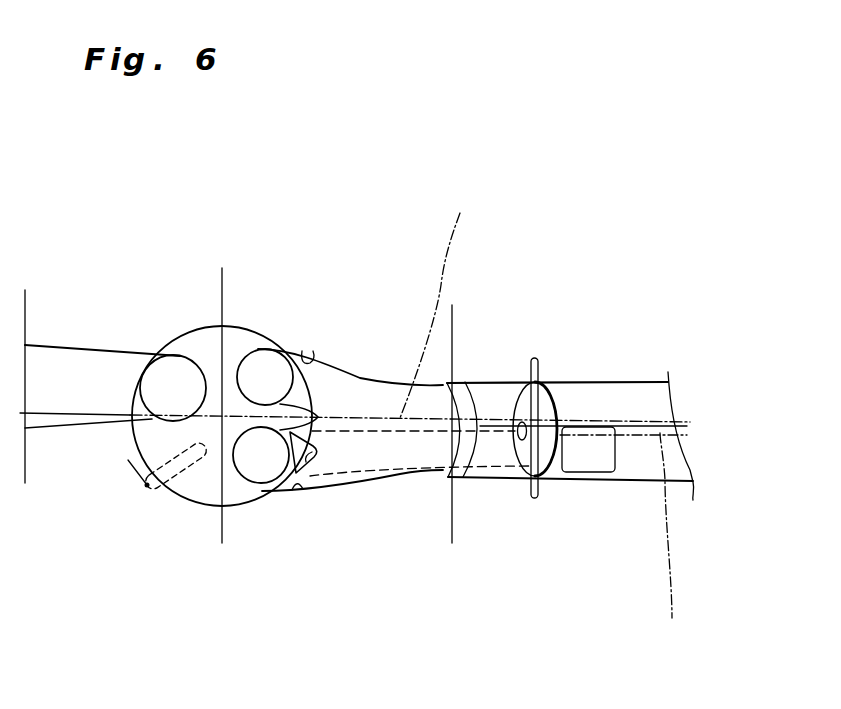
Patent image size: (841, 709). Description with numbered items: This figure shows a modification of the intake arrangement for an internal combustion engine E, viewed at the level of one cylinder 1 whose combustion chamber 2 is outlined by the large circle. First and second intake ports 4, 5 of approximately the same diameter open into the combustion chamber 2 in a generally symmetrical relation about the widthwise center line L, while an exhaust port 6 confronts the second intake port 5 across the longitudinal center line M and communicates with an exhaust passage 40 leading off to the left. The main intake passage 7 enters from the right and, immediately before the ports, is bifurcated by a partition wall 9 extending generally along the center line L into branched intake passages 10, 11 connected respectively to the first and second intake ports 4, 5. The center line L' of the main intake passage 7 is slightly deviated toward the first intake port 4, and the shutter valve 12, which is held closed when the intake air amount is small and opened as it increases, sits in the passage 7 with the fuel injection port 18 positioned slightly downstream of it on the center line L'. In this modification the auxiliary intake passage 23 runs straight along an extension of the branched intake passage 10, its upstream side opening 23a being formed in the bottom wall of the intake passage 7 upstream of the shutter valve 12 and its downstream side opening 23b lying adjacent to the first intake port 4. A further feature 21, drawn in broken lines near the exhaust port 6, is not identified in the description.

The cylinder 1 is at (192, 313).
The combustion chamber 2 is at (207, 500).
The first intake port 4 is at (258, 474).
The second intake port 5 is at (258, 360).
The exhaust port 6 is at (160, 415).
The main intake passage 7 is at (600, 383).
The partition wall 9 is at (318, 368).
The branched intake passage 10 is at (299, 488).
The branched intake passage 11 is at (313, 360).
The shutter valve 12 is at (563, 467).
The fuel injection port 18 is at (527, 470).
The slot 21 is at (176, 478).
The auxiliary intake passage 23 is at (370, 474).
The upstream side opening 23a is at (600, 473).
The downstream side opening 23b is at (300, 458).
The exhaust passage 40 is at (50, 347).
The longitudinal center line M is at (223, 298).
The widthwise direction center line L is at (433, 301).
The center line of intake passage L' is at (623, 543).
The internal combustion engine E is at (477, 352).